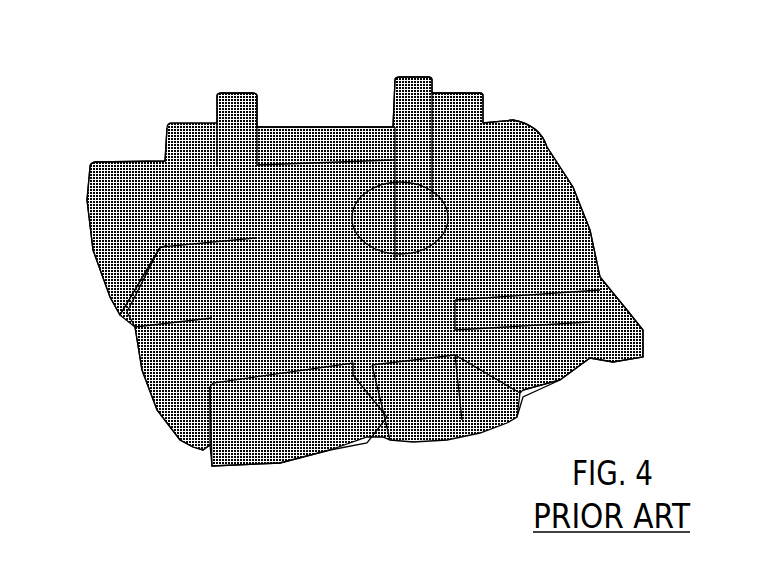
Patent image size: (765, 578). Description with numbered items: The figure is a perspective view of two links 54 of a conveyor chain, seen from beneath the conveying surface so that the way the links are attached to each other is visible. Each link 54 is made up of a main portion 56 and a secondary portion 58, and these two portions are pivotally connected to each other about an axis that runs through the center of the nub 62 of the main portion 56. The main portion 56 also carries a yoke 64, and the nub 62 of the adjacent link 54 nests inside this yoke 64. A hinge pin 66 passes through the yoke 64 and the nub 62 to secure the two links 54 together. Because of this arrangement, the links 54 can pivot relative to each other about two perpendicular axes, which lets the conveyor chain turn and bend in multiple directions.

The link 54 is at (547, 163).
The main portion 56 is at (112, 228).
The secondary portion 58 is at (157, 277).
The nub 62 is at (427, 217).
The yoke 64 is at (420, 97).
The hinge pin 66 is at (335, 128).